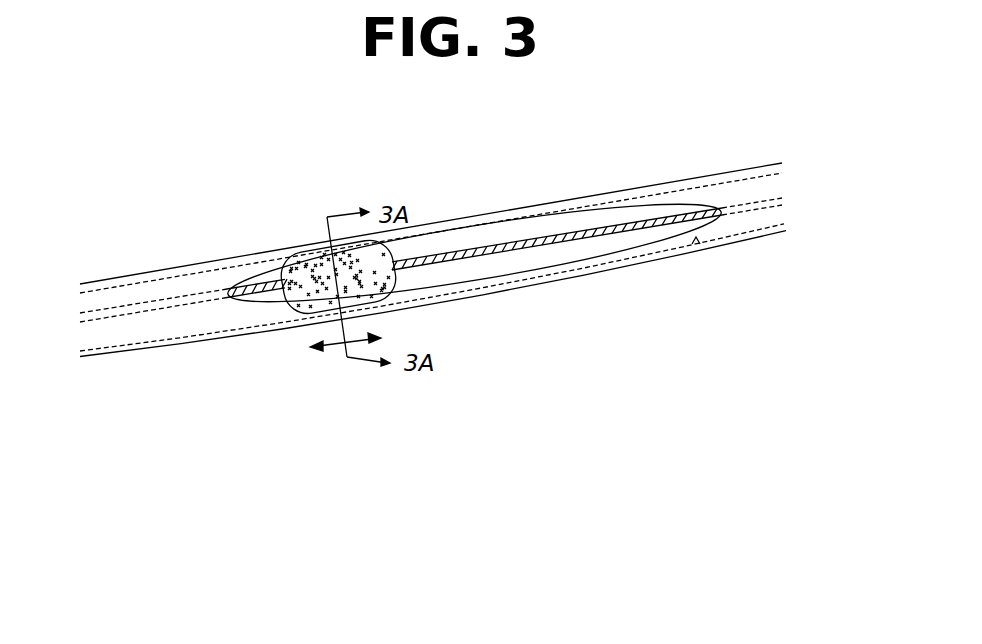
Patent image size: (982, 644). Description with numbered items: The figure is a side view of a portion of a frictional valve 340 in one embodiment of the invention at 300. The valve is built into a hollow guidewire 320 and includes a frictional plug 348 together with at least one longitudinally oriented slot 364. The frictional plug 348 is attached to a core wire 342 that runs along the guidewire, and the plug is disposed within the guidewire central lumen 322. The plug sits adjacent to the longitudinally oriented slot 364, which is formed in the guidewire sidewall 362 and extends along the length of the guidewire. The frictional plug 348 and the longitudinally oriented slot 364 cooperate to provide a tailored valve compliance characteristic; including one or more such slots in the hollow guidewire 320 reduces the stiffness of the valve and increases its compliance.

The embodiment of the present invention 300 is at (121, 201).
The hollow guidewire 320 is at (710, 248).
The guidewire central lumen 322 is at (784, 208).
The frictional valve 340 is at (305, 202).
The core wire 342 is at (255, 295).
The frictional plug 348 is at (286, 300).
The guidewire sidewall 362 is at (497, 293).
The longitudinally oriented slot 364 is at (541, 268).